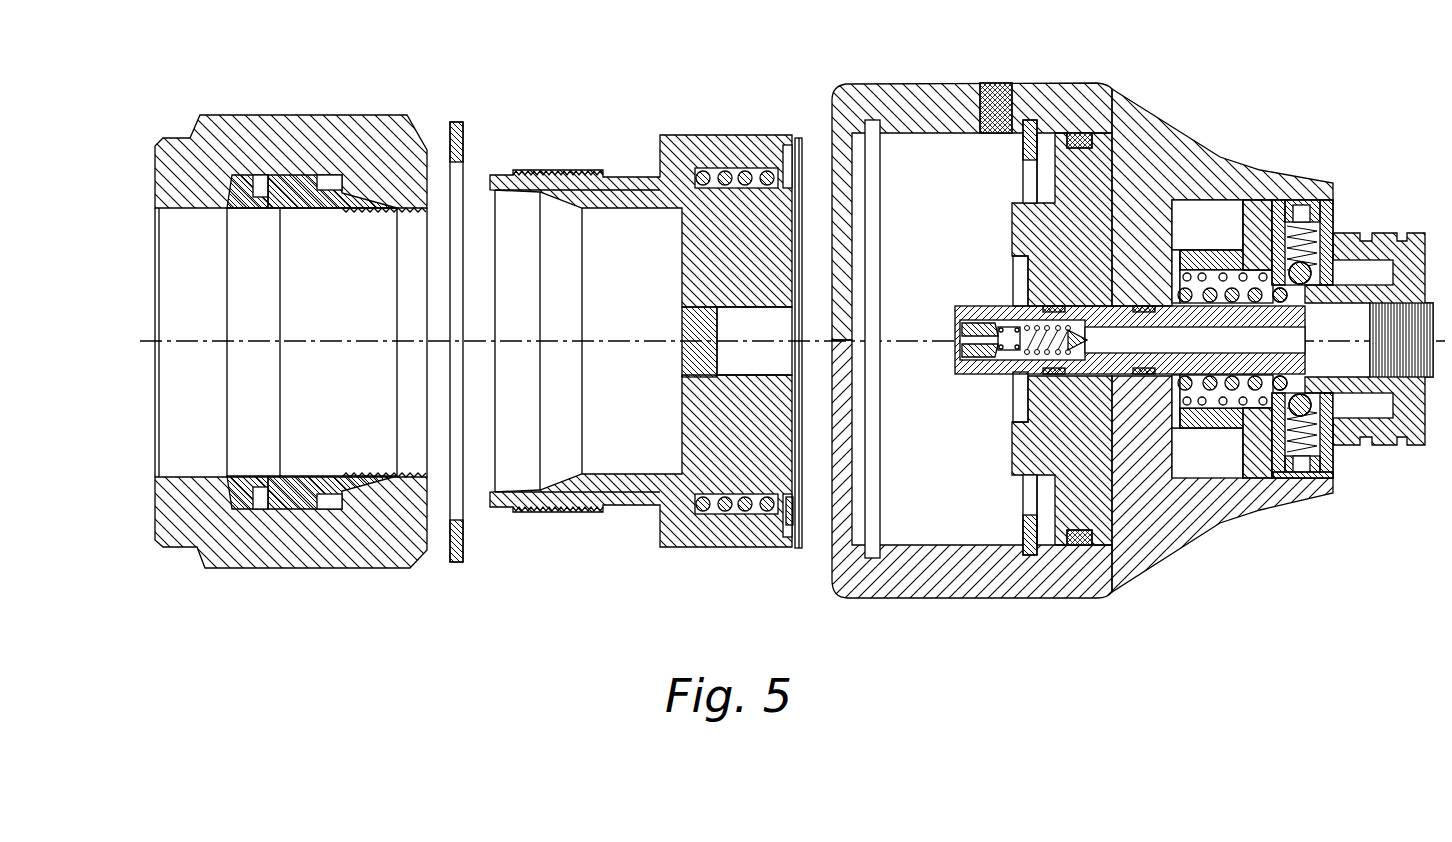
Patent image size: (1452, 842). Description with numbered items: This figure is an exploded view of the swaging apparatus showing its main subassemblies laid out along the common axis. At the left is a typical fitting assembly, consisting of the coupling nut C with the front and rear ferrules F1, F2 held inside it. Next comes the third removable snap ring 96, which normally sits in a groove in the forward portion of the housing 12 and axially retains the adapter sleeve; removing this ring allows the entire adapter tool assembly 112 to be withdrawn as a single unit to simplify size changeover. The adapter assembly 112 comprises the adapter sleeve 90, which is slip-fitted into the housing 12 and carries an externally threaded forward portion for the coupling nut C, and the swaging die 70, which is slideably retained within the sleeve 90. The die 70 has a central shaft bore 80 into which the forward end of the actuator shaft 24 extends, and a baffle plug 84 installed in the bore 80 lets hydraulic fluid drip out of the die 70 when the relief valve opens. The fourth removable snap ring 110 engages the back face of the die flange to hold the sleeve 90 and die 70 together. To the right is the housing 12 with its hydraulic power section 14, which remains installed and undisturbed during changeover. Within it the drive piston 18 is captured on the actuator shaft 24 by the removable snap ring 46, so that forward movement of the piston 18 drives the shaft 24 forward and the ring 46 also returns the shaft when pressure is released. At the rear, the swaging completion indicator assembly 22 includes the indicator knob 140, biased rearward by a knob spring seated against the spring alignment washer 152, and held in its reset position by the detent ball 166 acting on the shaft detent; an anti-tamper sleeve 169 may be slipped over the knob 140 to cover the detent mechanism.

The coupling nut C is at (266, 112).
The front ferrule F1 is at (323, 210).
The rear ferrule F2 is at (238, 210).
The third removable snap ring 96 is at (463, 128).
The adapter tool assembly 112 is at (646, 328).
The swaging die 70 is at (700, 420).
The adapter sleeve 90 is at (673, 524).
The baffle plug 84 is at (690, 325).
The central shaft bore 80 is at (785, 311).
The fourth removable snap ring 110 is at (797, 536).
The housing 12 is at (922, 93).
The hydraulic power section 14 is at (1191, 101).
The drive piston 18 is at (1013, 228).
The removable snap ring 46 is at (1013, 380).
The actuator shaft 24 is at (968, 303).
The spring alignment washer 152 is at (1183, 258).
The indicator knob 140 is at (1257, 212).
The detent ball 166 is at (1335, 222).
The anti-tamper sleeve 169 is at (1303, 480).
The swaging completion indicator assembly 22 is at (1383, 173).